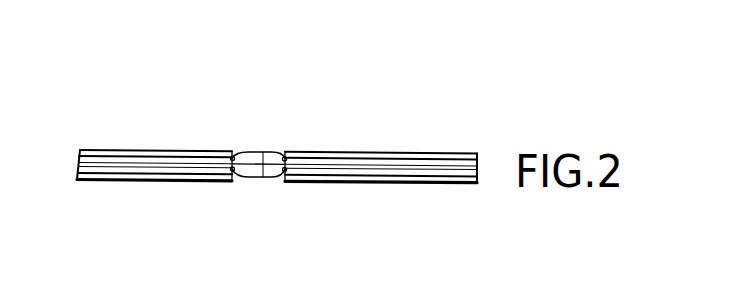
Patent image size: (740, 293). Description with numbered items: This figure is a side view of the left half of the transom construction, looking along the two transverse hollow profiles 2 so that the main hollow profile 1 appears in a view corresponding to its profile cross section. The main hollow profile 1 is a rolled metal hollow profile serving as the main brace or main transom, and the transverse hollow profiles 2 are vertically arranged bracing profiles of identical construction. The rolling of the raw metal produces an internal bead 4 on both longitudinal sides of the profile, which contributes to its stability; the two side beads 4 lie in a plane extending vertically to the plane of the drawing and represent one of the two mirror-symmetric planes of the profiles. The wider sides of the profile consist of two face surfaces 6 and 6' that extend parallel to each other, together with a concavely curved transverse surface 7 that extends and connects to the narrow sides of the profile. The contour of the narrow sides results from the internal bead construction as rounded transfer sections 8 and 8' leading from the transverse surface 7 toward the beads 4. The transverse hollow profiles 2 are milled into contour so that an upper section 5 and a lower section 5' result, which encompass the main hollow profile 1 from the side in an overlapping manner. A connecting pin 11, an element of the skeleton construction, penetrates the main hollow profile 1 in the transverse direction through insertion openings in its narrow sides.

The main hollow profile 1 is at (263, 151).
The transverse hollow profiles 2 is at (108, 150).
The internal bead 4 is at (232, 151).
The upper section 5 is at (258, 128).
The lower section 5' is at (246, 211).
The face surface 6 is at (278, 108).
The face surface 6' is at (277, 214).
The transverse surface 7 is at (123, 166).
The rounded transfer section 8 is at (289, 137).
The rounded transfer section 8' is at (296, 193).
The connecting pin 11 is at (262, 181).